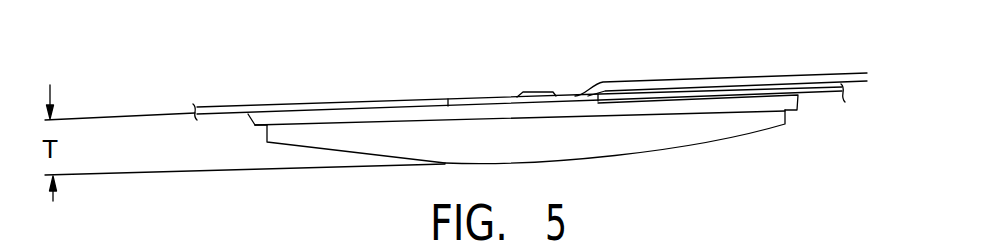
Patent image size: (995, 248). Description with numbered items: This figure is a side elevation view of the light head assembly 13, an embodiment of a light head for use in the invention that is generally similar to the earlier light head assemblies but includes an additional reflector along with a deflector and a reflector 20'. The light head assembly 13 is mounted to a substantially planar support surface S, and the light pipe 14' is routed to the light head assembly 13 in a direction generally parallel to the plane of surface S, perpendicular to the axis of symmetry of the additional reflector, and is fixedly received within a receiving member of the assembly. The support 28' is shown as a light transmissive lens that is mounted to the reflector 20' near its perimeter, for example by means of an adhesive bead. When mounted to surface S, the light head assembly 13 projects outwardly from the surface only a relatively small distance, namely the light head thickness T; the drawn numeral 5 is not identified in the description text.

The strip 5 is at (240, 107).
The body 13 is at (709, 141).
The blade 14' is at (721, 49).
The heel edge point 20' is at (271, 88).
The support member 28' is at (523, 99).